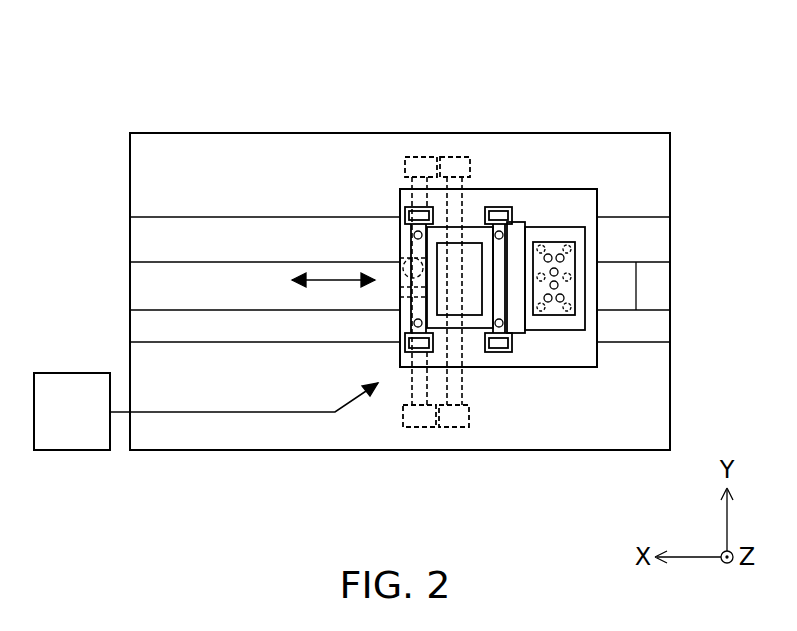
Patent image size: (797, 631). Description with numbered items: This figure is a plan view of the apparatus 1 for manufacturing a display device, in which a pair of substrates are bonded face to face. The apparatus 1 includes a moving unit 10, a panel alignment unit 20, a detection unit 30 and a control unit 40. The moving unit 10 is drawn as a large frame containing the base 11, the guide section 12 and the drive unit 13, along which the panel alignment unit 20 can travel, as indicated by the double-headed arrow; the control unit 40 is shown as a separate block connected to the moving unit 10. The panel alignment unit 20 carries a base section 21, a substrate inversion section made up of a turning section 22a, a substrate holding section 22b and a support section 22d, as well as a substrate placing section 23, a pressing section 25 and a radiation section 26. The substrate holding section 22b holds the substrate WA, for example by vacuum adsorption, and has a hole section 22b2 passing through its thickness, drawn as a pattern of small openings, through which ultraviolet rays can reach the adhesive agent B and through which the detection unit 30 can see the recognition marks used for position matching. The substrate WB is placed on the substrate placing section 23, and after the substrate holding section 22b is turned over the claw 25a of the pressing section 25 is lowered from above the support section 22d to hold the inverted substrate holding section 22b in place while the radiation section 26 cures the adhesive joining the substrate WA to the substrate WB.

The apparatus for manufacturing a display device 1 is at (694, 78).
The moving unit 10 is at (243, 188).
The base 11 is at (222, 423).
The guide section 12 is at (650, 244).
The drive unit 13 is at (655, 279).
The panel alignment unit 20 is at (587, 223).
The base section 21 is at (543, 208).
The turning section 22a is at (523, 227).
The substrate holding section 22b is at (580, 332).
The hole section 22b2 is at (567, 312).
The support section 22d is at (413, 232).
The substrate placing section 23 is at (470, 335).
The pressing section 25 is at (407, 208).
The claw 25a is at (406, 222).
The radiation section 26 is at (430, 157).
The detection unit 30 is at (452, 433).
The control unit 40 is at (74, 399).
The substrate WA is at (565, 244).
The substrate WB is at (472, 240).
The adhesive agent B is at (548, 302).